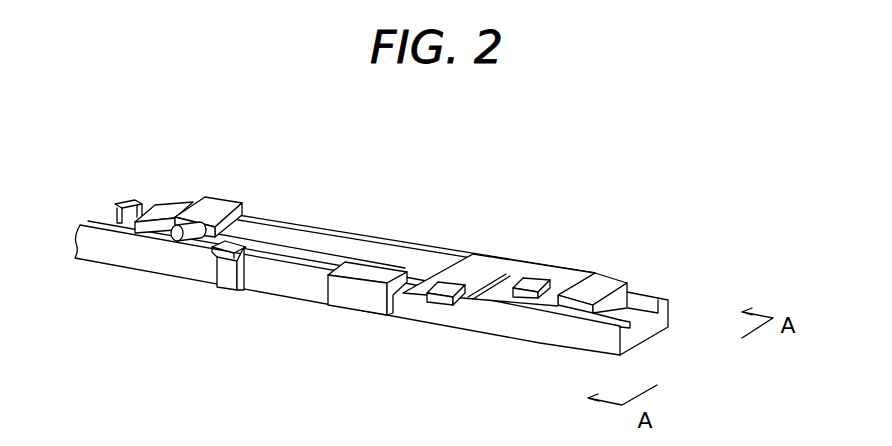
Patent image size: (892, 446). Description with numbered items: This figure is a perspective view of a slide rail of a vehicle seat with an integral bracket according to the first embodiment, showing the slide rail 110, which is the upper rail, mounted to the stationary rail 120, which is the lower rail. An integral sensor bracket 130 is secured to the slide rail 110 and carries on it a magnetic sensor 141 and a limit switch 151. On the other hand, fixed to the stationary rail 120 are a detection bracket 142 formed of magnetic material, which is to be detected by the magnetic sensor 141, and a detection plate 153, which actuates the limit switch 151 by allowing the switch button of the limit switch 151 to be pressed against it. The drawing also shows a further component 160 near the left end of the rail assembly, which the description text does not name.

The slide rail 110 is at (618, 277).
The stationary rail 120 is at (544, 327).
The integral sensor bracket 130 is at (510, 263).
The magnetic sensor 141 is at (448, 285).
The detection bracket 142 is at (357, 298).
The limit switch 151 is at (540, 280).
The detection plate 153 is at (230, 277).
The roller 160 is at (186, 228).